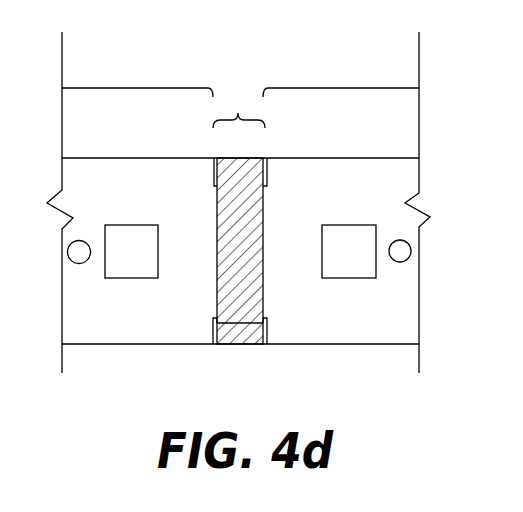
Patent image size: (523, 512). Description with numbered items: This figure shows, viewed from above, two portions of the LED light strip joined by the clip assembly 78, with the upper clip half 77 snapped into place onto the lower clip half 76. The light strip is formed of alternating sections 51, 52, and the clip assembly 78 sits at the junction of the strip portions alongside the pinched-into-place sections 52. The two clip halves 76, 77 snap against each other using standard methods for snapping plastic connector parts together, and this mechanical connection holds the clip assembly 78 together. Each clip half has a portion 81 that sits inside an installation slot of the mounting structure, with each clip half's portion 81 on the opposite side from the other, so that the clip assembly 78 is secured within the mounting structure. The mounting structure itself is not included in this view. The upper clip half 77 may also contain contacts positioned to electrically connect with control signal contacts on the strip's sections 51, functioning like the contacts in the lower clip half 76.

The section 51 is at (238, 112).
The section 52 is at (95, 88).
The lower clip half 76 is at (232, 345).
The upper clip half 77 is at (237, 202).
The clip assembly 78 is at (242, 261).
The portion 81 is at (248, 168).